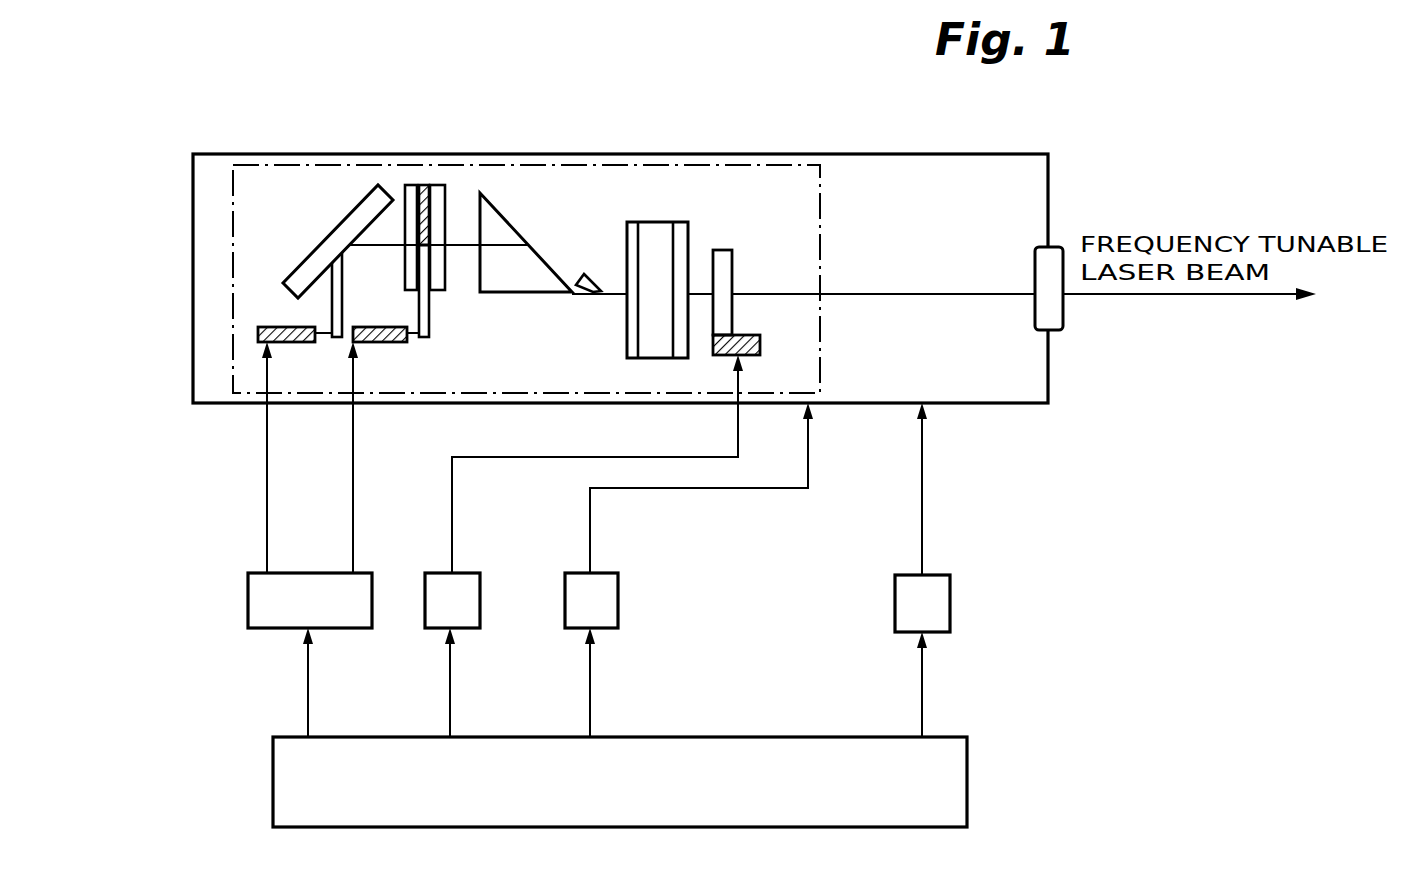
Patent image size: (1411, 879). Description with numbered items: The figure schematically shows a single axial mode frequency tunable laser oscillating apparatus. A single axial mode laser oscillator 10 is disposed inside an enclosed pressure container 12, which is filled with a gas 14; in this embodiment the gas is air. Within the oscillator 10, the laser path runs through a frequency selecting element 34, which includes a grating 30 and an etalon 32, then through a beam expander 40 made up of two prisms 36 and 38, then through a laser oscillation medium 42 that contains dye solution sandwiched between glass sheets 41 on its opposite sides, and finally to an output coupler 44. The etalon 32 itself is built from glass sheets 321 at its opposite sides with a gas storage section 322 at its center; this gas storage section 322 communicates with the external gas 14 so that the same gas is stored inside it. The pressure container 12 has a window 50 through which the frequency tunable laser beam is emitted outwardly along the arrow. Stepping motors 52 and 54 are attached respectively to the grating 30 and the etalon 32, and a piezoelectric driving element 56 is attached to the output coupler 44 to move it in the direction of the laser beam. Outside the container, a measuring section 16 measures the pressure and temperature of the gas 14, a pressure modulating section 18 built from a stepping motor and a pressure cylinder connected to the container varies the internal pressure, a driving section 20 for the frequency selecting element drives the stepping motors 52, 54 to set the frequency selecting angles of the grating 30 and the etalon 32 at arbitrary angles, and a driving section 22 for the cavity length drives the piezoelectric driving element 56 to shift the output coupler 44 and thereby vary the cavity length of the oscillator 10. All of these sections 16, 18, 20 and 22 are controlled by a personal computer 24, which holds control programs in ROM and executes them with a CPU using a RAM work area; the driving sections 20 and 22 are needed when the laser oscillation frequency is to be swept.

The single axial mode laser oscillator 10 is at (717, 165).
The pressure container 12 is at (908, 154).
The gas 14 is at (268, 190).
The measuring section for the pressure and the temperature of the gas 16 is at (950, 597).
The pressure modulating section 18 is at (608, 628).
The driving section for the frequency selecting element 20 is at (248, 618).
The driving section for the cavity length 22 is at (475, 630).
The personal computer 24 is at (968, 783).
The grating 30 is at (347, 214).
The etalon 32 is at (437, 200).
The glass sheets 321 is at (412, 185).
The gas storage section 322 is at (437, 185).
The frequency selecting element 34 is at (303, 59).
The prism 36 is at (507, 213).
The prism 38 is at (590, 273).
The beam expander 40 is at (558, 67).
The glass sheets 41 is at (674, 358).
The laser oscillation medium 42 is at (658, 222).
The output coupler 44 is at (733, 257).
The window 50 is at (1063, 330).
The stepping motor 52 is at (258, 333).
The stepping motor 54 is at (373, 345).
The piezoelectric driving element 56 is at (760, 345).